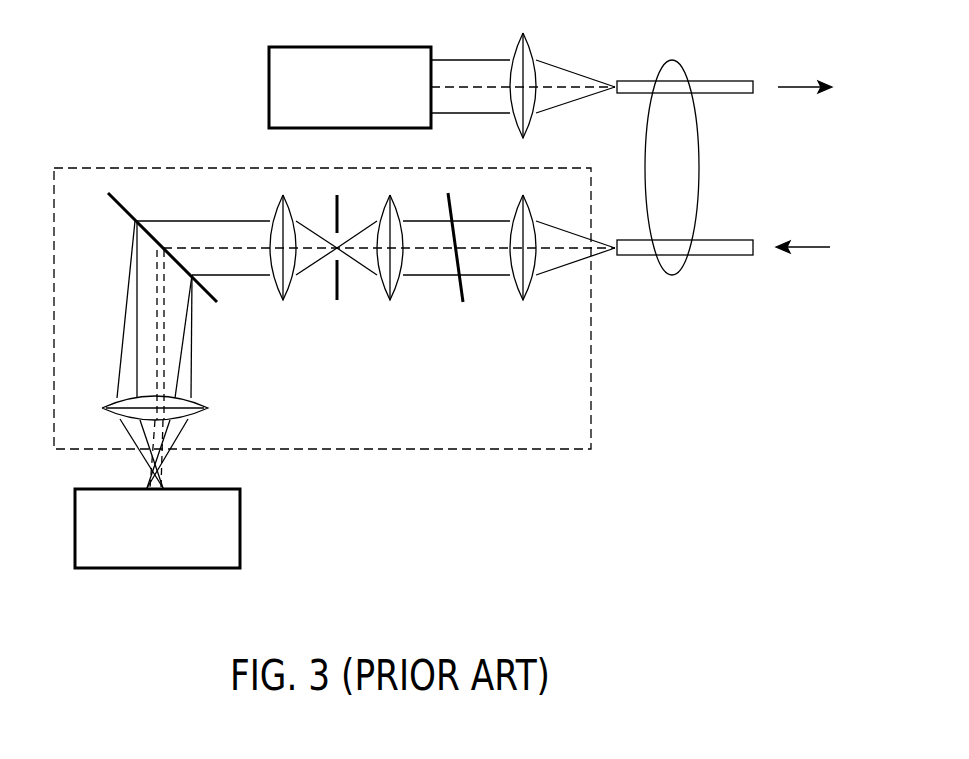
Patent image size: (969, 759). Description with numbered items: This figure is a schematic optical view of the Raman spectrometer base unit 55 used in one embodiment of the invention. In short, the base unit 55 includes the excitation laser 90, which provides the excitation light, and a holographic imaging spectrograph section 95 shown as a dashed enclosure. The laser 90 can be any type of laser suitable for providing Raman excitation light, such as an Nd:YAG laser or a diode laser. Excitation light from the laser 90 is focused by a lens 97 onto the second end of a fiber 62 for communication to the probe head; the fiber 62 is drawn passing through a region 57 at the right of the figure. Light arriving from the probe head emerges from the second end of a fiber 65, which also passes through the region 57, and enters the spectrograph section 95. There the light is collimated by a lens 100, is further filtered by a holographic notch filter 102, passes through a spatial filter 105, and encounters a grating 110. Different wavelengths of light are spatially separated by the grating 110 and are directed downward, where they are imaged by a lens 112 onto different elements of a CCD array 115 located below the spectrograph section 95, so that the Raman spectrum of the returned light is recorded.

The Raman spectrometer base unit 55 is at (647, 502).
The fiber bundle cross-section region 57 is at (672, 62).
The fiber 62 is at (712, 81).
The fiber 65 is at (705, 240).
The excitation laser 90 is at (393, 47).
The holographic imaging spectrograph section 95 is at (548, 167).
The lens 97 is at (528, 40).
The lens 100 is at (531, 285).
The holographic notch filter 102 is at (464, 295).
The spatial filter 105 is at (403, 302).
The grating 110 is at (236, 302).
The lens 112 is at (208, 406).
The CCD array 115 is at (191, 489).